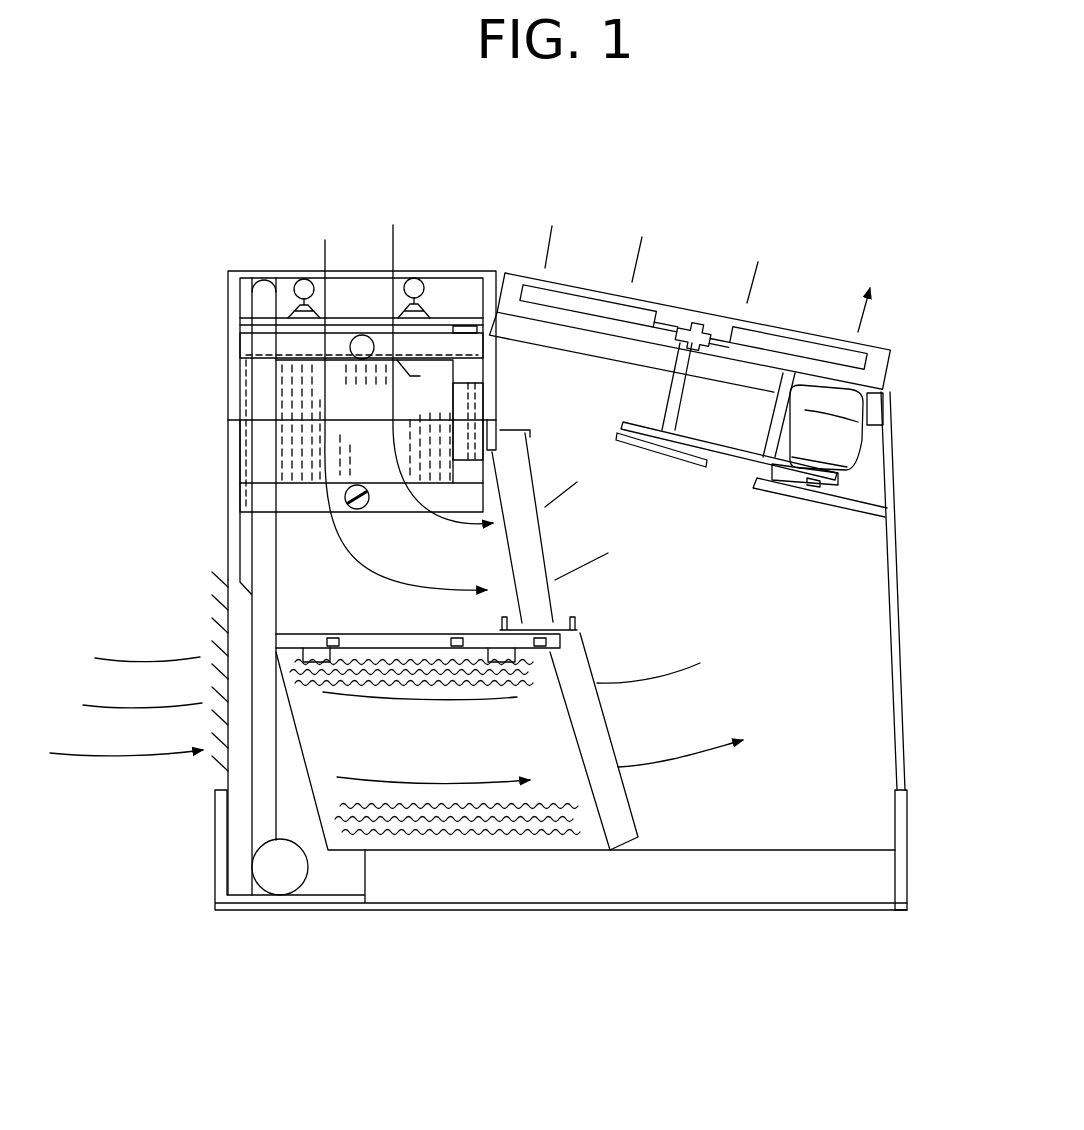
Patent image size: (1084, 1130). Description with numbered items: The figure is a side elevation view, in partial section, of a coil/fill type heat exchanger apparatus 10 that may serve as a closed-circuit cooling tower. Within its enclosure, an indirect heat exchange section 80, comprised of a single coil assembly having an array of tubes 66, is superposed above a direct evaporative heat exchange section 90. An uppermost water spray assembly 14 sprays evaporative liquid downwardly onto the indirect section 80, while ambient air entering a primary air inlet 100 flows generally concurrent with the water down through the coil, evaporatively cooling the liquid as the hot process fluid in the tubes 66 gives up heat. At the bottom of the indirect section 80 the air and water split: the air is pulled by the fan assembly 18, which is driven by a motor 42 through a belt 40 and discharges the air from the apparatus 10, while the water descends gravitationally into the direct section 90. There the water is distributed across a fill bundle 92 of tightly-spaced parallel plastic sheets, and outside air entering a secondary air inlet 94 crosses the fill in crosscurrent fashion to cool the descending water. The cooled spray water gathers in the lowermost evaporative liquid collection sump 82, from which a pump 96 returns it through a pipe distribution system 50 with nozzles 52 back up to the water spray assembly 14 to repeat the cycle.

The heat exchanger apparatus 10 is at (888, 312).
The water spray assembly 14 is at (405, 302).
The fan assembly 18 is at (702, 295).
The belt 40 is at (729, 460).
The motor 42 is at (838, 448).
The pipe distribution system 50 is at (302, 279).
The nozzles 52 is at (410, 316).
The tubes 66 is at (300, 445).
The indirect heat exchange section 80 is at (200, 412).
The evaporative liquid collection sump 82 is at (340, 895).
The direct evaporative heat exchange section 90 is at (640, 800).
The fill bundle 92 is at (392, 660).
The secondary air inlet 94 is at (217, 768).
The pump 96 is at (268, 868).
The primary air inlet 100 is at (350, 222).